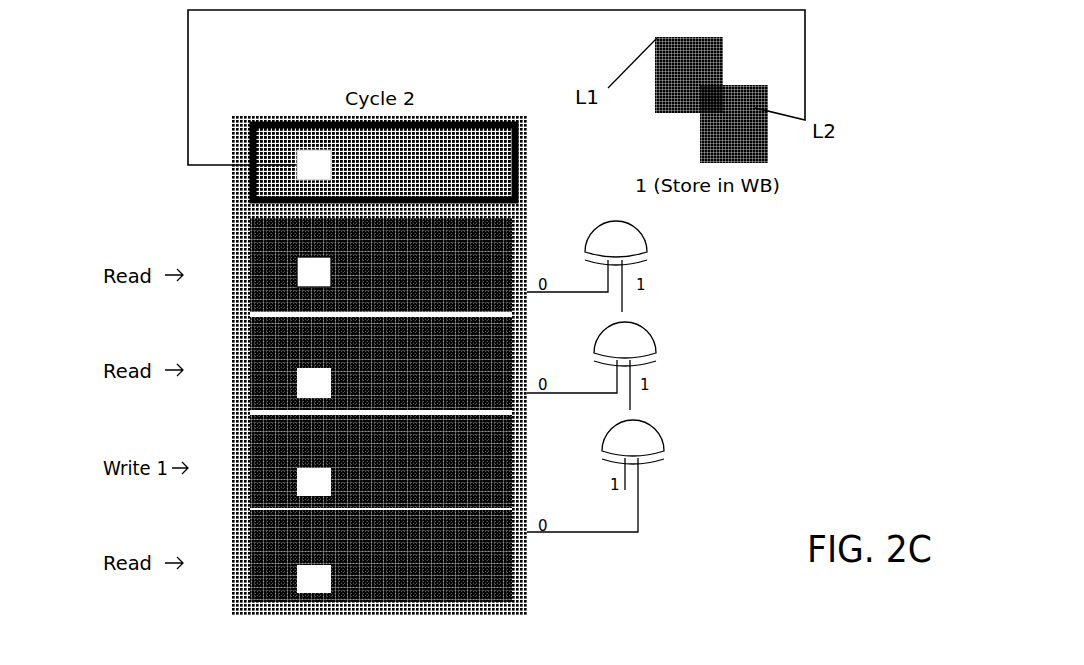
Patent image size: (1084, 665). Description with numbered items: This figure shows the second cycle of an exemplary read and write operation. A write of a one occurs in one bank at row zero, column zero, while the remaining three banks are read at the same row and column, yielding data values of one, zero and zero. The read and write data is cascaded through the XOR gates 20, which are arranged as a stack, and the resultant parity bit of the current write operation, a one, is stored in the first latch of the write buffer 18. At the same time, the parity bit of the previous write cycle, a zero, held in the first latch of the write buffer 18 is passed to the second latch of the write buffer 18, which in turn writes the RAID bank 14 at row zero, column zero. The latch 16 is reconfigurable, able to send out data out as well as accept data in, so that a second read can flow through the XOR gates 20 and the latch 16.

The RAID bank 14 is at (490, 118).
The latch 16 is at (615, 212).
The write buffer 18 is at (765, 82).
The XOR gates 20 is at (657, 440).